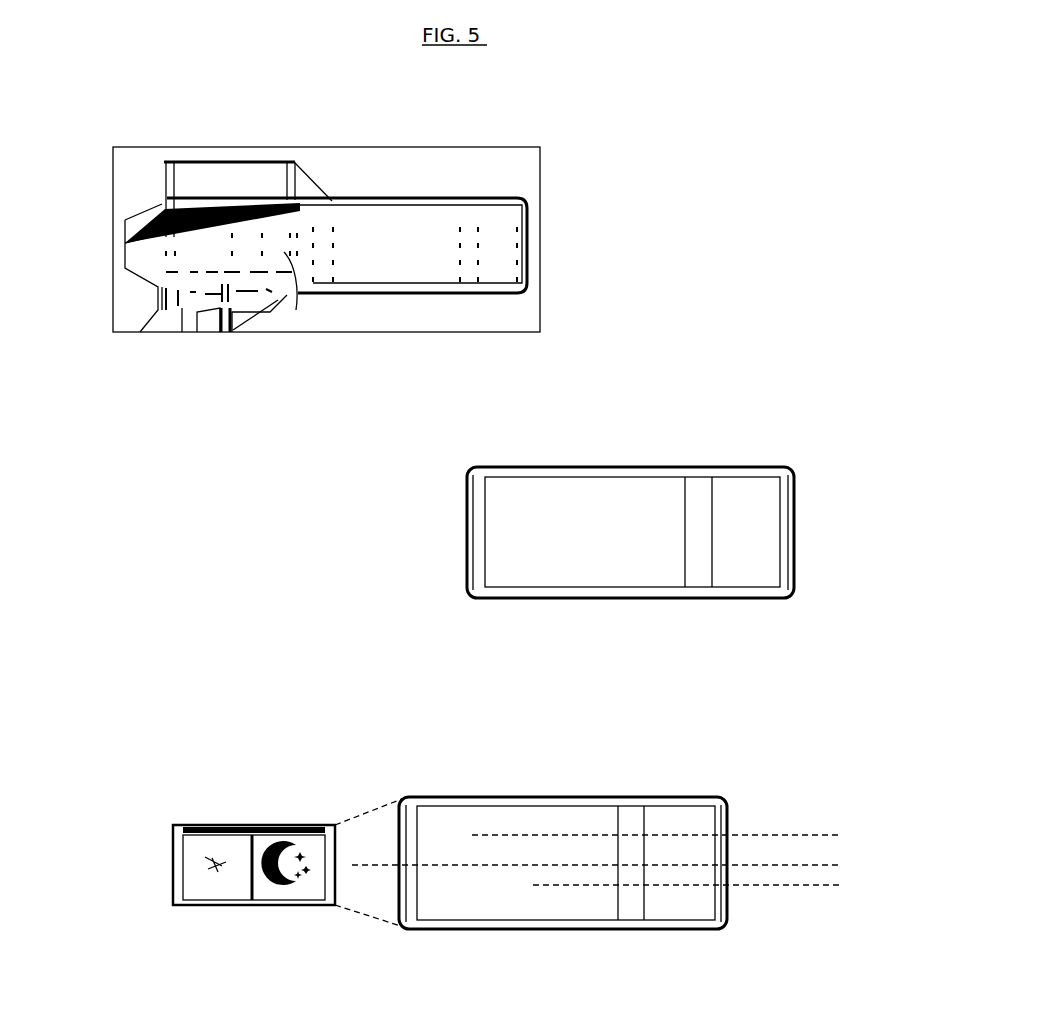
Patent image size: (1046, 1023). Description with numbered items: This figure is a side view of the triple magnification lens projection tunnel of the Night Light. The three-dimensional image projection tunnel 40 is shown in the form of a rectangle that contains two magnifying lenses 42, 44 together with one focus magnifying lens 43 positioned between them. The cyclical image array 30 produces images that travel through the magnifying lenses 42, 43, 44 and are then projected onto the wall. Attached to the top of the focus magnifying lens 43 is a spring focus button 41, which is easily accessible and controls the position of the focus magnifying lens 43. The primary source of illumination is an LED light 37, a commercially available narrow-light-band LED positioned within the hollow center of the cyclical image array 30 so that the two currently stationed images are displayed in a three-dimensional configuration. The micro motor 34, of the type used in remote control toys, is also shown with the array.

The cyclical image array 30 is at (157, 210).
The micro motor 34 is at (182, 332).
The LED light 37 is at (296, 310).
The 3D image projection tunnel 40 is at (728, 460).
The spring focus button 41 is at (695, 467).
The magnifying lens 42 is at (323, 230).
The focus magnifying lens 43 is at (470, 220).
The magnifying lens 44 is at (522, 207).